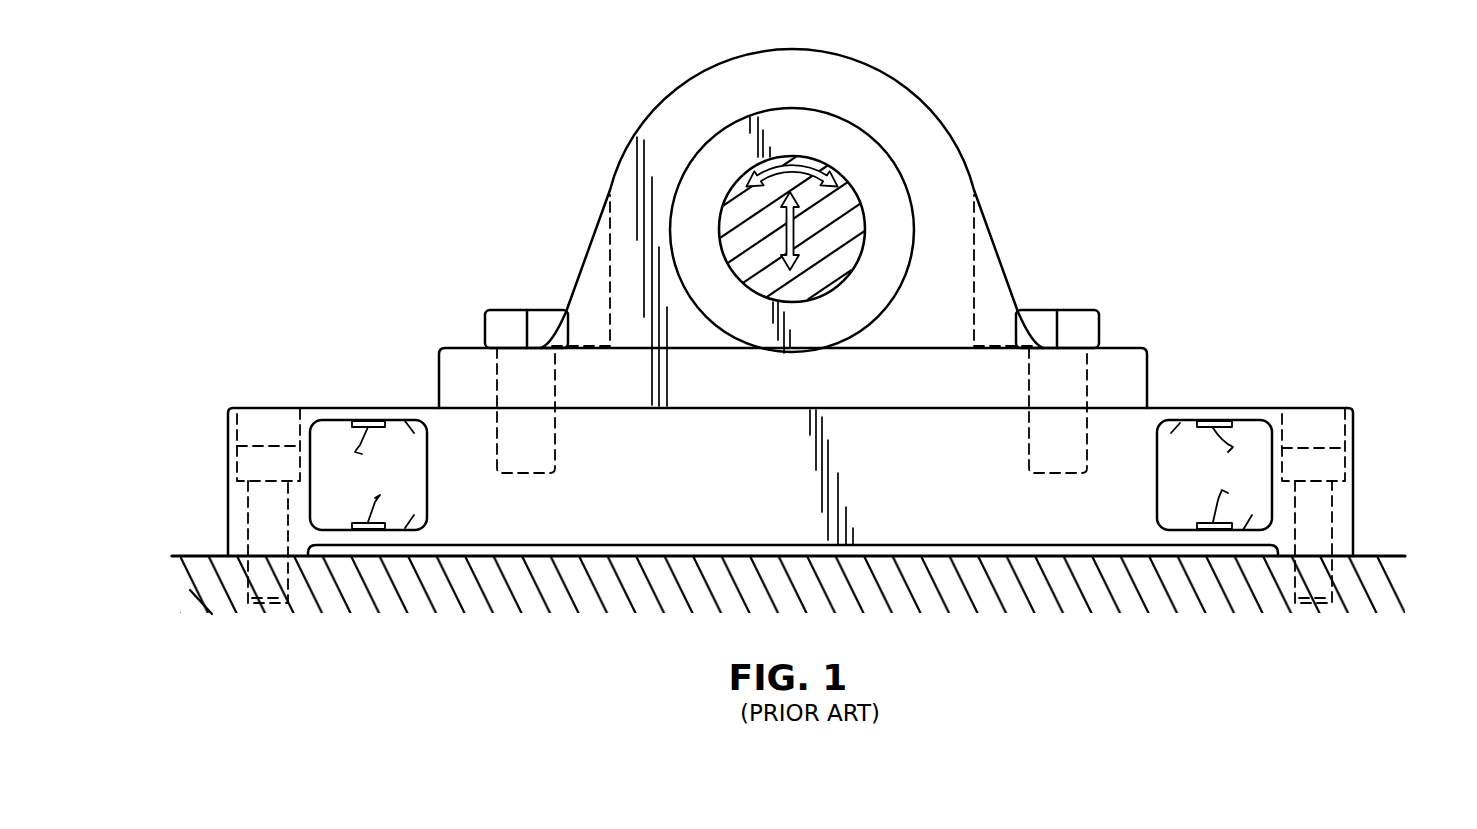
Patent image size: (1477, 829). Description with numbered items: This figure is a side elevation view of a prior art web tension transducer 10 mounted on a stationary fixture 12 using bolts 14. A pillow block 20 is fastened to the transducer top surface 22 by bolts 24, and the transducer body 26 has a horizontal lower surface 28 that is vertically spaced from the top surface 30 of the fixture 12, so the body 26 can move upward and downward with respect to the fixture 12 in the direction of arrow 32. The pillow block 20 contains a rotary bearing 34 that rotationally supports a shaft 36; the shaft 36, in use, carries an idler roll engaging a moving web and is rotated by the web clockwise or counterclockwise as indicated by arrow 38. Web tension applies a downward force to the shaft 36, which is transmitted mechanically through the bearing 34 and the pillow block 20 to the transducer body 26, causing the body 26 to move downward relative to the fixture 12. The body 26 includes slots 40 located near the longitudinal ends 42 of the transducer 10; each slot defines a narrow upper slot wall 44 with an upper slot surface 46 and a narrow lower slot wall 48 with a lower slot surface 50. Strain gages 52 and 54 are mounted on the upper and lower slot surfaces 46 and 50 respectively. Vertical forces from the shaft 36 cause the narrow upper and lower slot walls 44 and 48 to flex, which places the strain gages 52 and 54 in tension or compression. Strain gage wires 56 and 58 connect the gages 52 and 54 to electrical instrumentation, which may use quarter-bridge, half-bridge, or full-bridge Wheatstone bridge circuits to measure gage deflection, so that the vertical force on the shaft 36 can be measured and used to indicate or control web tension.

The transducer 10 is at (286, 352).
The stationary fixture 12 is at (183, 542).
The bolts 14 is at (248, 462).
The pillow block 20 is at (938, 92).
The transducer top surface 22 is at (897, 407).
The bolts 24 is at (507, 312).
The transducer body 26 is at (936, 550).
The horizontal lower surface 28 is at (678, 547).
The top surface 30 is at (1367, 556).
The arrow 32 is at (795, 240).
The rotary bearing 34 is at (703, 165).
The shaft 36 is at (840, 260).
The arrow 38 is at (788, 163).
The slots 40 is at (333, 512).
The longitudinal ends 42 is at (228, 425).
The narrow upper slot walls 44 is at (376, 415).
The upper slot surfaces 46 is at (414, 433).
The narrow lower slot walls 48 is at (377, 535).
The lower slot surfaces 50 is at (414, 515).
The strain gage 52 is at (357, 420).
The strain gage 54 is at (363, 527).
The strain gage wire 56 is at (362, 443).
The strain gage wire 58 is at (368, 503).